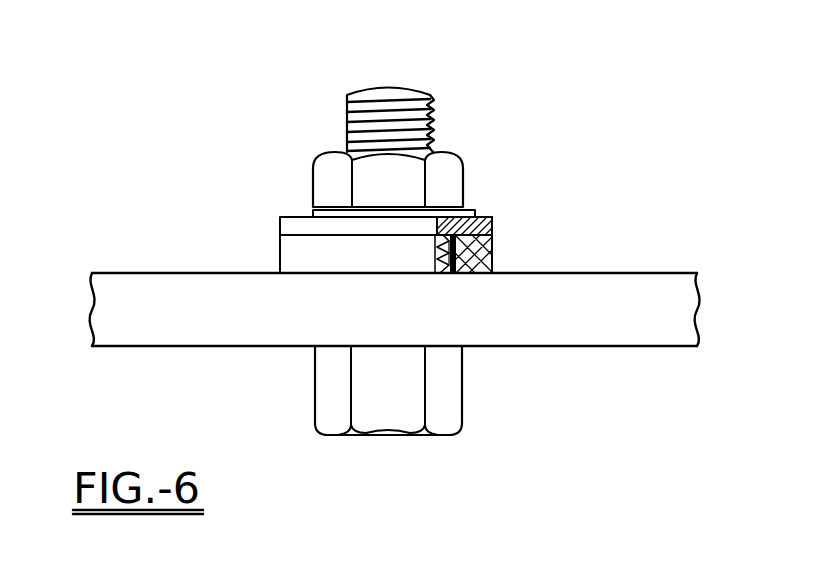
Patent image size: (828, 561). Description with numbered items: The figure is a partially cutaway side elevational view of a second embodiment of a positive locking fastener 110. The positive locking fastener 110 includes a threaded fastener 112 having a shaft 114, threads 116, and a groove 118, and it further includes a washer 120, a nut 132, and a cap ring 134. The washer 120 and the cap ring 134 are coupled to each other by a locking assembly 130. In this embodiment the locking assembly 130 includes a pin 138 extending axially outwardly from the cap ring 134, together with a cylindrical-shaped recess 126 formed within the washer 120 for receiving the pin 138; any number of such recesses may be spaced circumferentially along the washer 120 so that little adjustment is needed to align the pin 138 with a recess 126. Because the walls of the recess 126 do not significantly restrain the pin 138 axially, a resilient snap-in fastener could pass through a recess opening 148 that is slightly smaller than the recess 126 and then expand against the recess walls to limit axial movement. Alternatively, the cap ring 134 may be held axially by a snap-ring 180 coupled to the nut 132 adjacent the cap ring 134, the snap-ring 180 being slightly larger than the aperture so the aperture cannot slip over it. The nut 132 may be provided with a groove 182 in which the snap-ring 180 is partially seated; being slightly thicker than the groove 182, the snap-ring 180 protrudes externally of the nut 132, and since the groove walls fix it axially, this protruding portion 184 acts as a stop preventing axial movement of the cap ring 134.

The positive locking fastener 110 is at (568, 98).
The threaded fastener 112 is at (462, 388).
The shaft 114 is at (376, 86).
The threads 116 is at (350, 108).
The groove 118 is at (428, 95).
The washer 120 is at (282, 252).
The cylindrical-shaped recess 126 is at (453, 274).
The locking assembly 130 is at (501, 235).
The nut 132 is at (320, 162).
The cap ring 134 is at (282, 222).
The pin 138 is at (436, 258).
The recess opening 148 is at (438, 237).
The snap-ring 180 is at (312, 215).
The groove 182 is at (462, 214).
The protruding portion 184 is at (476, 216).